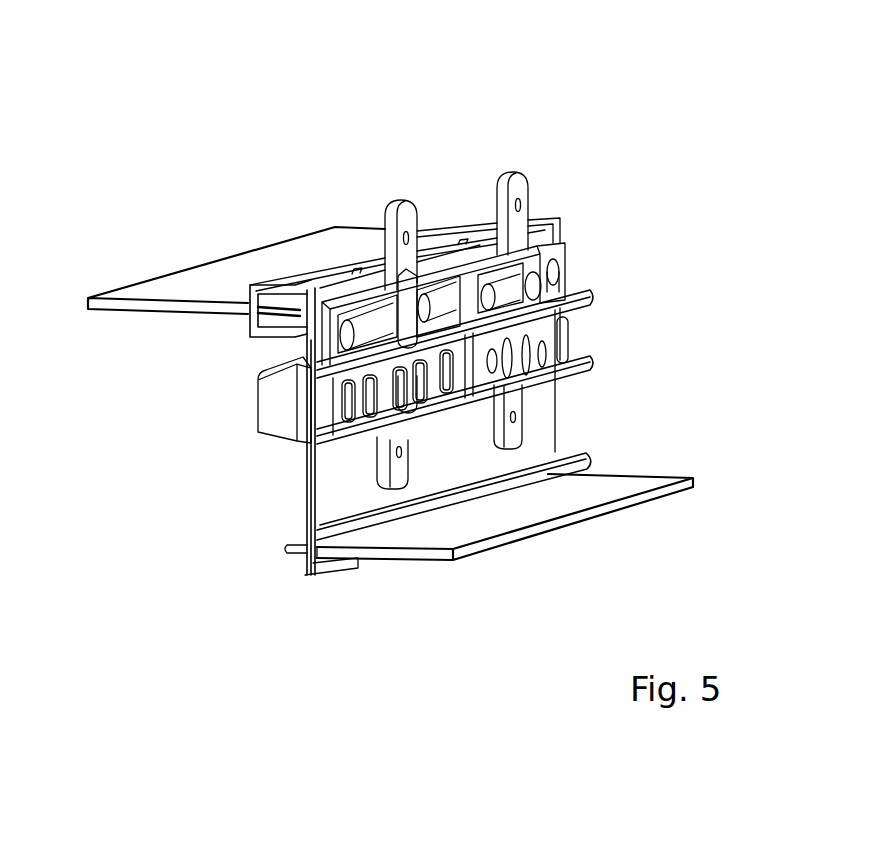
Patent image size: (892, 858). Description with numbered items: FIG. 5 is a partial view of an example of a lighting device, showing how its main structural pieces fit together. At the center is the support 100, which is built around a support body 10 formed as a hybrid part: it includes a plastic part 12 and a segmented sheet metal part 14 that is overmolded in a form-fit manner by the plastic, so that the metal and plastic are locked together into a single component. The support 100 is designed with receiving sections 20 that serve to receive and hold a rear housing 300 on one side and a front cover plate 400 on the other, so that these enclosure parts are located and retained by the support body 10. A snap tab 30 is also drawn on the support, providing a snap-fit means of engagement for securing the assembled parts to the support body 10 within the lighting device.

The support 100 is at (443, 355).
The support body 10 is at (596, 298).
The plastic part 12 is at (256, 436).
The segmented sheet metal part 14 is at (520, 190).
The receiving sections 20 is at (270, 313).
The snap tab 30 is at (402, 199).
The rear housing 300 is at (185, 281).
The front cover plate 400 is at (628, 487).